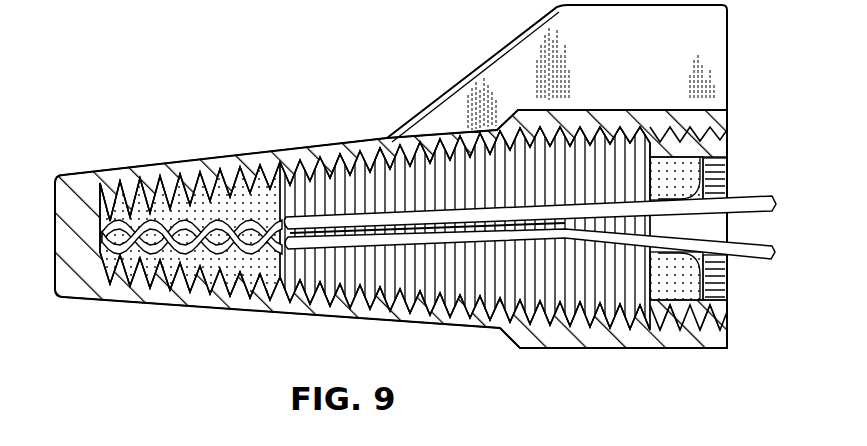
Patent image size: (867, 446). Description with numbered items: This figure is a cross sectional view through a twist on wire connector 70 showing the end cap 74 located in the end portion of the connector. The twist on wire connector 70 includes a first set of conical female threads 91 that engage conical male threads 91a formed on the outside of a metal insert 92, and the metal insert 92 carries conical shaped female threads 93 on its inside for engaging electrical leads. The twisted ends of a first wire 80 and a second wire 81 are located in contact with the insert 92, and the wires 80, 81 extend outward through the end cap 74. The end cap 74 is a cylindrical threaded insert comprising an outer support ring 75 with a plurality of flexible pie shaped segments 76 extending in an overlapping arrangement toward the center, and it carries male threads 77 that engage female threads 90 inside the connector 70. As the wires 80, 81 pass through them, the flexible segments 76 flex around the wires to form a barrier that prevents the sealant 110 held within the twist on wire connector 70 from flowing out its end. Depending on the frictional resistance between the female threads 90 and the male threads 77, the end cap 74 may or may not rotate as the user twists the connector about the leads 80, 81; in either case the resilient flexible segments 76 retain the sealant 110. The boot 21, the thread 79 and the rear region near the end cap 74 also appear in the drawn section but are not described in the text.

The twist on wire connector 70 is at (122, 128).
The boot 21 is at (628, 65).
The end cap 74 is at (740, 318).
The outer support ring 75 is at (729, 141).
The flexible segments 76 is at (704, 197).
The male threads 77 is at (668, 332).
The thread 79 is at (705, 322).
The first wire 80 is at (762, 200).
The second wire 81 is at (764, 257).
The female threads 90 is at (517, 108).
The conical female threads 91 is at (441, 146).
The conical male threads 91a is at (381, 143).
The metal insert 92 is at (338, 146).
The conical shaped female threads 93 is at (296, 152).
The sealant 110 is at (592, 286).